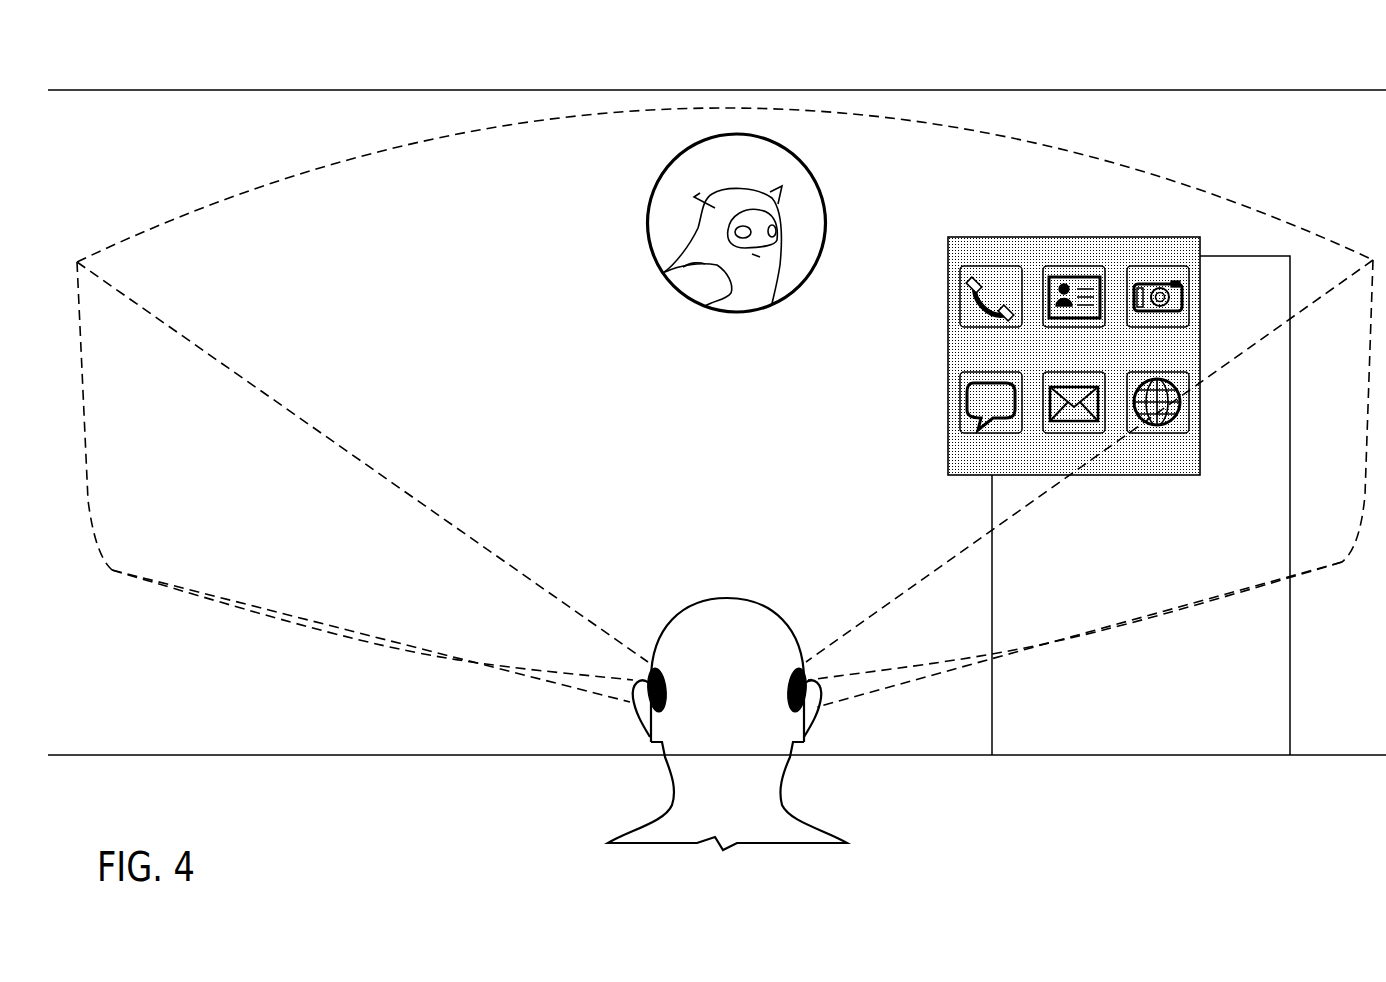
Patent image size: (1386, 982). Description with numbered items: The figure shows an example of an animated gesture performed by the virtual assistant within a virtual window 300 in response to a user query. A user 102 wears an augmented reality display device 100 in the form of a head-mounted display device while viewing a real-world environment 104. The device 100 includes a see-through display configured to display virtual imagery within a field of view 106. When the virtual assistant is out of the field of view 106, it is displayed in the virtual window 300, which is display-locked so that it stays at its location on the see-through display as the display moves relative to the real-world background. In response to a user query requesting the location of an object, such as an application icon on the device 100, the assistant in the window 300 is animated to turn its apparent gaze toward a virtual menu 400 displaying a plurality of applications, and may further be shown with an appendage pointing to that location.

The augmented reality display device 100 is at (652, 740).
The user 102 is at (742, 698).
The real-world environment 104 is at (1247, 70).
The field of view 106 is at (450, 134).
The virtual window 300 is at (827, 204).
The virtual menu 400 is at (1053, 236).